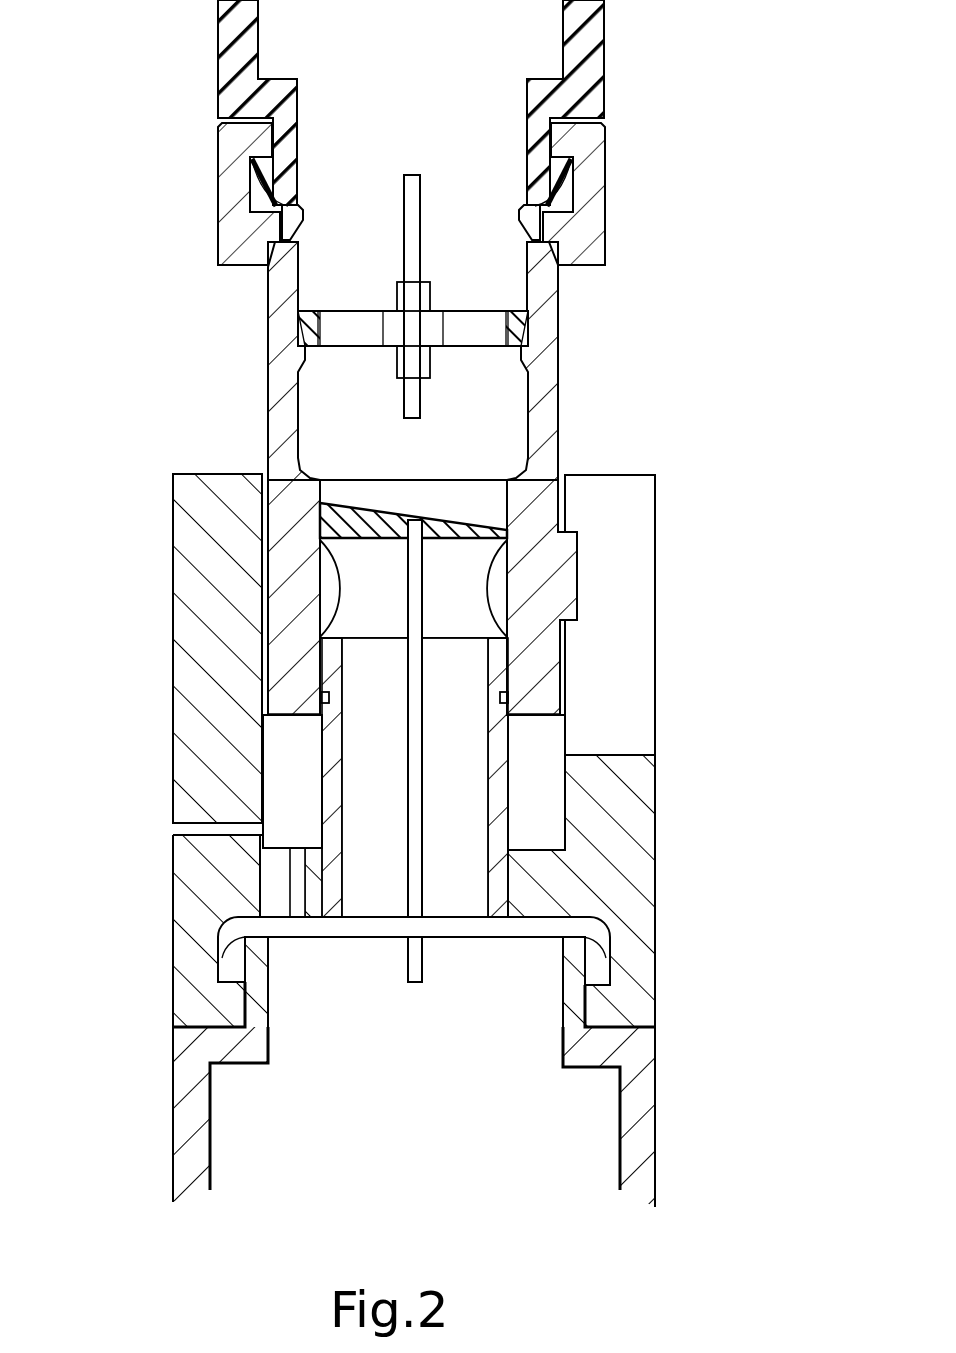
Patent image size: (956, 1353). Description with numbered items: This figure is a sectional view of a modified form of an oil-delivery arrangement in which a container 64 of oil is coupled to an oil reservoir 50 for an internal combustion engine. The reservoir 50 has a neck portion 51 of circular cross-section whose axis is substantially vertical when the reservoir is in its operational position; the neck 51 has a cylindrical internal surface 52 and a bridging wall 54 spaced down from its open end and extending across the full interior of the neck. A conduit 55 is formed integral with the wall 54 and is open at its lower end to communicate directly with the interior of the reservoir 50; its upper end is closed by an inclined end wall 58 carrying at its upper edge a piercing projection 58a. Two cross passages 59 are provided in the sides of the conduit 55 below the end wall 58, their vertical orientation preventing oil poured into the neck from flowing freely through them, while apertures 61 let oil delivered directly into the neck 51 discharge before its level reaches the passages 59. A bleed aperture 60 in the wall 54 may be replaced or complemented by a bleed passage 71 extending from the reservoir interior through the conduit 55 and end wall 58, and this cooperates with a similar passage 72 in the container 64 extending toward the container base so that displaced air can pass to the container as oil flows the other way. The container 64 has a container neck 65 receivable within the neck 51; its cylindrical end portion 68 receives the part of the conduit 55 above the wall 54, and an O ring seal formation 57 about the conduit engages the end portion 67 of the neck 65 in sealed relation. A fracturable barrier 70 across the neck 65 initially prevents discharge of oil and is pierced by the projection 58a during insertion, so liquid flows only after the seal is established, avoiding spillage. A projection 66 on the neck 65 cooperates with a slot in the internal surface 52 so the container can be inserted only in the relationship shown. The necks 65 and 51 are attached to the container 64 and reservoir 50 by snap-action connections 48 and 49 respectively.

The snap-action connection 48 is at (225, 147).
The snap-action connection 49 is at (190, 1005).
The oil reservoir 50 is at (190, 1110).
The neck portion 51 is at (190, 905).
The internal surface 52 is at (488, 812).
The bridging wall 54 is at (540, 905).
The conduit 55 is at (322, 760).
The O ring seal formation 57 is at (322, 697).
The inclined end wall 58 is at (318, 518).
The piercing projection 58a is at (358, 500).
The cross passages 59 is at (365, 612).
The bleed aperture 60 is at (335, 890).
The apertures 61 is at (185, 829).
The container 64 is at (222, 67).
The container neck 65 is at (272, 328).
The projection 66 is at (565, 548).
The end portion 67 is at (528, 737).
The end portion 68 is at (545, 652).
The fracturable barrier 70 is at (432, 478).
The bleed passage 71 is at (405, 975).
The passage 72 is at (413, 216).